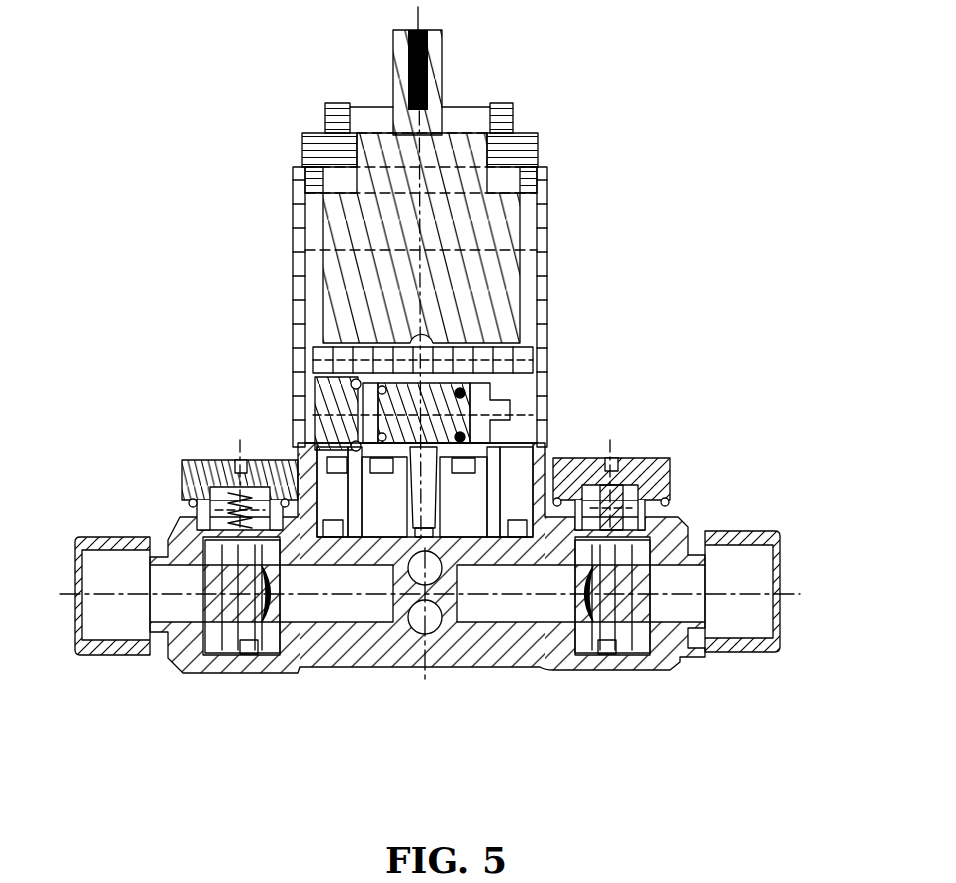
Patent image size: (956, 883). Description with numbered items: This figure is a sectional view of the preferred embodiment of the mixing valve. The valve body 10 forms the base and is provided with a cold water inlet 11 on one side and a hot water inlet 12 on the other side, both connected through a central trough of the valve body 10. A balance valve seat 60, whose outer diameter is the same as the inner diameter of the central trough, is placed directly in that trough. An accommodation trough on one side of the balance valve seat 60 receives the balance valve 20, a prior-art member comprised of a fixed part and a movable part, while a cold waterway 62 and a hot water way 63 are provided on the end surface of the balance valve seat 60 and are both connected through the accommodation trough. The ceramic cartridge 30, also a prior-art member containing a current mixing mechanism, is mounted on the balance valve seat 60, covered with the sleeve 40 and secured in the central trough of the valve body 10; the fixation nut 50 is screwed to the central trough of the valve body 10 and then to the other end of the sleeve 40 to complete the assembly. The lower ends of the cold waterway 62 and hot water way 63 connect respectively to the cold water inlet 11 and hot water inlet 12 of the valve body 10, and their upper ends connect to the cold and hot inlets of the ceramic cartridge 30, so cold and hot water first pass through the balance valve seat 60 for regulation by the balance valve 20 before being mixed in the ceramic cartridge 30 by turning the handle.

The valve body 10 is at (362, 658).
The cold water inlet 11 is at (83, 572).
The hot water inlet 12 is at (775, 558).
The balance valve 20 is at (460, 403).
The ceramic cartridge 30 is at (507, 212).
The sleeve 40 is at (548, 273).
The fixation nut 50 is at (507, 123).
The balance valve seat 60 is at (462, 442).
The cold waterway 62 is at (390, 485).
The hot water way 63 is at (457, 500).